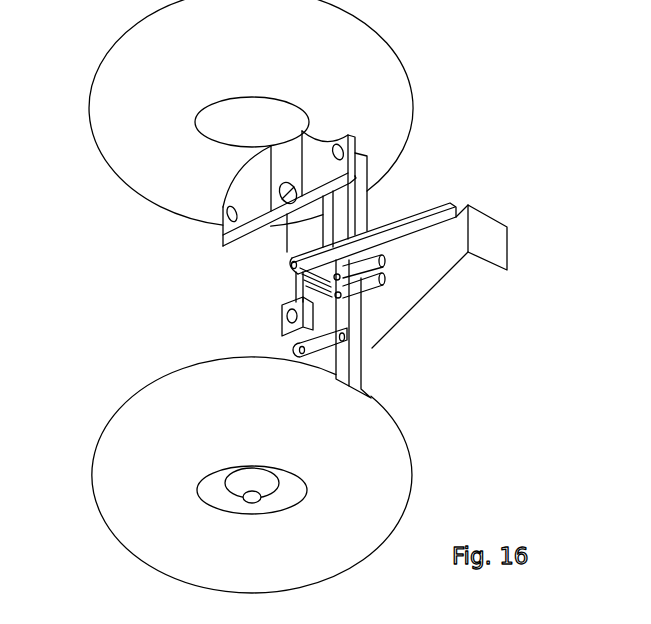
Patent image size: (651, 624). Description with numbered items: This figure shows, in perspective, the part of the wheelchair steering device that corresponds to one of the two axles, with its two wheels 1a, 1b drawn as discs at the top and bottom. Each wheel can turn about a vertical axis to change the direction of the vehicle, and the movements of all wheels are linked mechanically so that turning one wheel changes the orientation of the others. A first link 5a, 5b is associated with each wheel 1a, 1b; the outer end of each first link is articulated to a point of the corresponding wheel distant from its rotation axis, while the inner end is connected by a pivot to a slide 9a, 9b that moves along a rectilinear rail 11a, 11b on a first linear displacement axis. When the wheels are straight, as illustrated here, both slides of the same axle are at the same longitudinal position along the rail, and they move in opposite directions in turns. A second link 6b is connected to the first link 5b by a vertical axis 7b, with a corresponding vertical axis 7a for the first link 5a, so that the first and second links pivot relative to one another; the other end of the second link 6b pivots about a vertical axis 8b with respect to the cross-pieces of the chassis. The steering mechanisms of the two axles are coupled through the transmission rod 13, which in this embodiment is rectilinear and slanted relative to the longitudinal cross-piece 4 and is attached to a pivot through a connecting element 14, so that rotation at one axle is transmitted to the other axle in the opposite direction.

The wheel 1a is at (148, 165).
The wheel 1b is at (155, 531).
The longitudinal cross-piece 4 is at (482, 273).
The first link 5a is at (358, 187).
The first link 5b is at (362, 375).
The second link 6b is at (328, 342).
The vertical axis 7a is at (337, 232).
The vertical axis 7b is at (365, 347).
The vertical axis 8b is at (298, 323).
The slide 9a is at (312, 272).
The slide 9b is at (320, 290).
The rectilinear rail 11a is at (390, 258).
The rectilinear rail 11b is at (388, 277).
The transmission rod 13 is at (433, 212).
The connecting element 14 is at (291, 267).